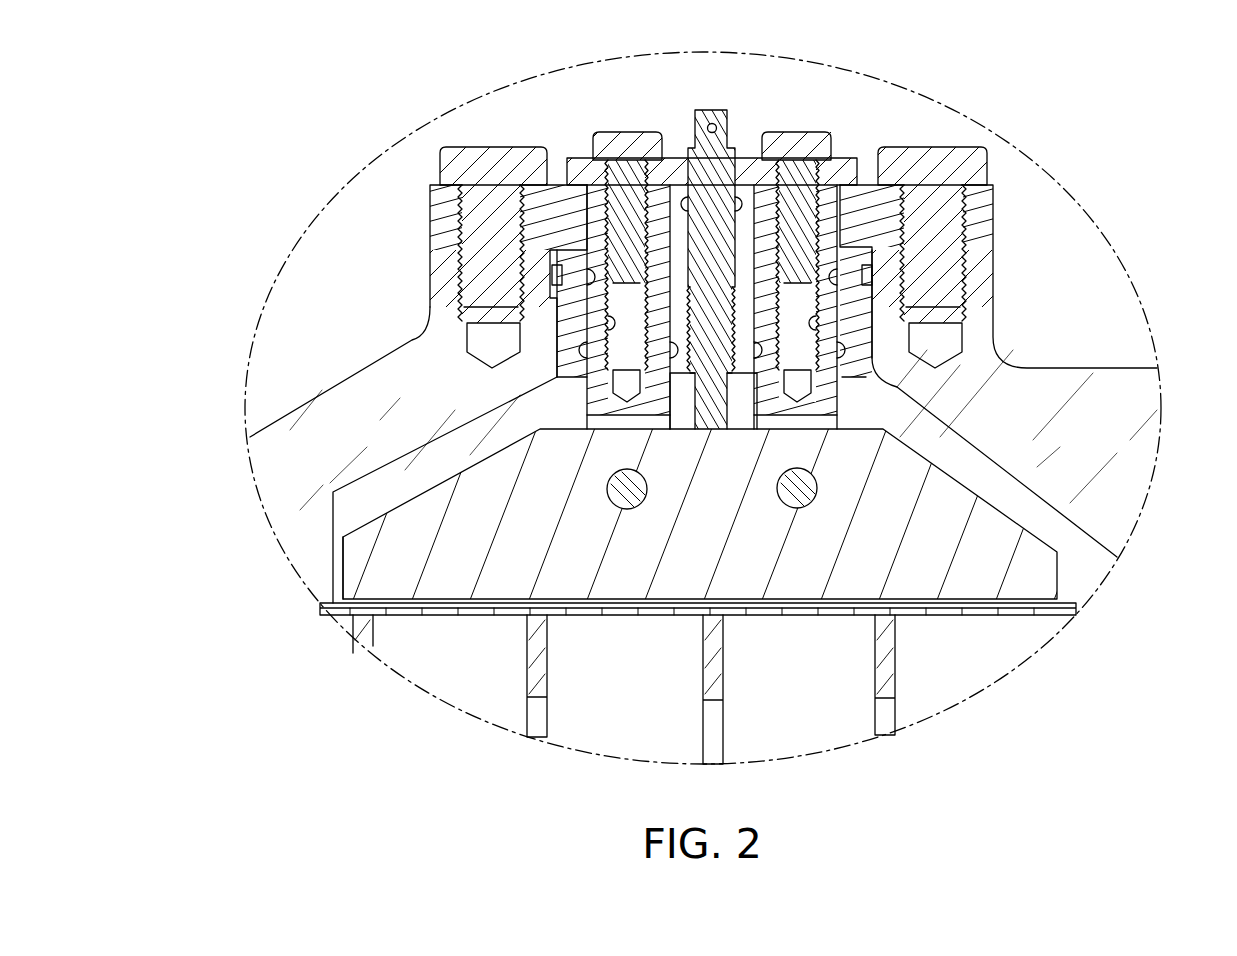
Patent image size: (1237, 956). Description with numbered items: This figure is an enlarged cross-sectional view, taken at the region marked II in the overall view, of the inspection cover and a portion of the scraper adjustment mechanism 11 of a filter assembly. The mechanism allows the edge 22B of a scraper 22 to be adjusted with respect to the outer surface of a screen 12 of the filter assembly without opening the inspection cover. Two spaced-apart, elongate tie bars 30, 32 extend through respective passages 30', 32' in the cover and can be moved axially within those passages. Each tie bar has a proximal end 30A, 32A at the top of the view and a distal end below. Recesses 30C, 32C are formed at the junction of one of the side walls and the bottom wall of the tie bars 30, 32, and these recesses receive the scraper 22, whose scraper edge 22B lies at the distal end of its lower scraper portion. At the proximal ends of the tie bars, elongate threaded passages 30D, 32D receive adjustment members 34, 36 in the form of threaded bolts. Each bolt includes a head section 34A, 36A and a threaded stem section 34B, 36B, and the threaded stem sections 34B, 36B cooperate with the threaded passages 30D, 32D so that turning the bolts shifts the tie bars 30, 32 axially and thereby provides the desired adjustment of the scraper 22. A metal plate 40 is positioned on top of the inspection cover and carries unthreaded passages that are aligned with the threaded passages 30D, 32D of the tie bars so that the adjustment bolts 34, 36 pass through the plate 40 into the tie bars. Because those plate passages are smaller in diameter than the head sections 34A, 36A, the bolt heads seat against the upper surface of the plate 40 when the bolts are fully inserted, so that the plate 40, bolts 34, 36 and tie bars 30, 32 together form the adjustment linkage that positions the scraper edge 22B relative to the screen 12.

The clamp assembly 11 is at (380, 360).
The screen 12 is at (1028, 603).
The scraper 22 is at (975, 490).
The scraper edge 22B is at (381, 597).
The tie bar 30 is at (1019, 371).
The passage 30' is at (1030, 322).
The proximal end 30A is at (845, 220).
The recess 30C is at (832, 420).
The threaded passage 30D is at (843, 330).
The tie bar 32 is at (388, 394).
The passage 32' is at (407, 278).
The proximal end 32A is at (597, 250).
The recess 32C is at (603, 420).
The threaded passage 32D is at (580, 338).
The adjustment member 34 is at (776, 128).
The head section 34A is at (822, 138).
The threaded stem section 34B is at (830, 252).
The adjustment member 36 is at (640, 131).
The head section 36A is at (652, 142).
The threaded stem section 36B is at (625, 187).
The metal plate 40 is at (752, 158).